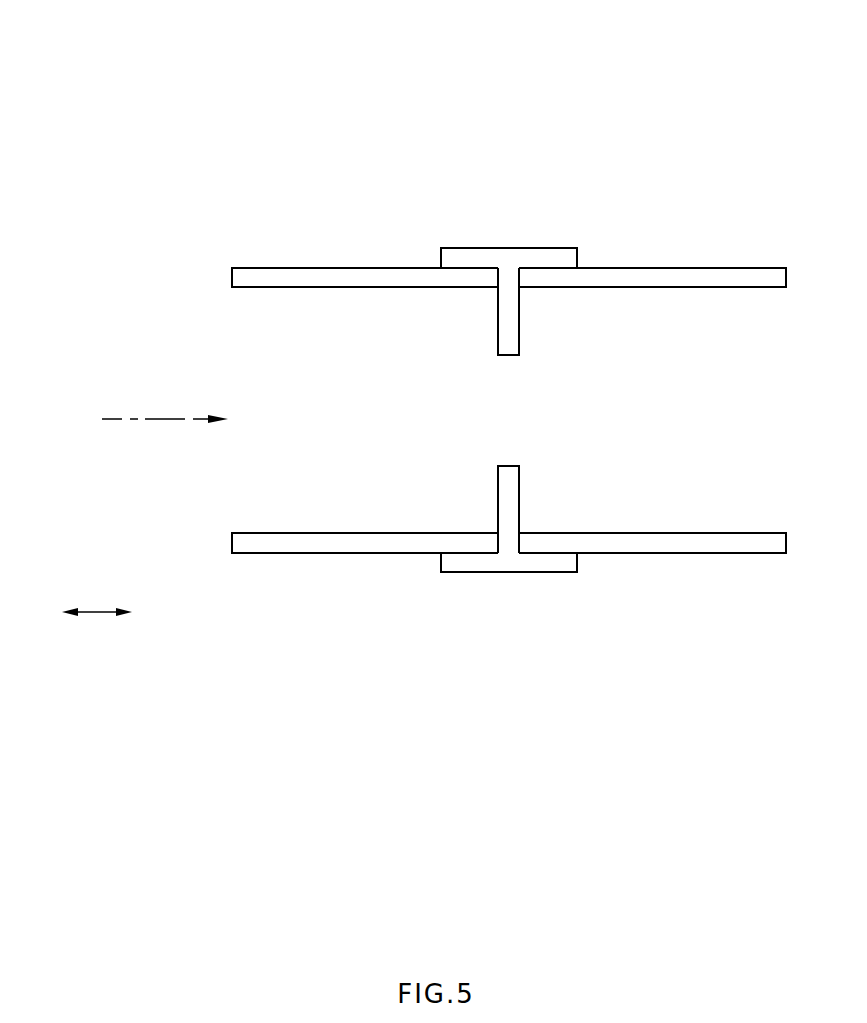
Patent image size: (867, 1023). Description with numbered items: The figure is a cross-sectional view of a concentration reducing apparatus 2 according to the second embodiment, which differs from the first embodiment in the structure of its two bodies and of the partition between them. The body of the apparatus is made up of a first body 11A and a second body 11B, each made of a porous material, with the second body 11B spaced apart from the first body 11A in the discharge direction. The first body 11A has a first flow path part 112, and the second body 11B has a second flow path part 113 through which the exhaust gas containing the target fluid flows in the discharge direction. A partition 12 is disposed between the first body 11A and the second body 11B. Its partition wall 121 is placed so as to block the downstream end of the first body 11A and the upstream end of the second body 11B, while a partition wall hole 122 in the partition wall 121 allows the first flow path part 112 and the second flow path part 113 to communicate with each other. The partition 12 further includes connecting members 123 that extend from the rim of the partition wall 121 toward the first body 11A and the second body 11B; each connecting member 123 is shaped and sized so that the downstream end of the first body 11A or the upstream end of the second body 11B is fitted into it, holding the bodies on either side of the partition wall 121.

The concentration reducing apparatus 2 is at (155, 42).
The first body 11A is at (307, 276).
The second body 11B is at (696, 276).
The partition 12 is at (375, 178).
The partition wall 121 is at (503, 332).
The partition wall hole 122 is at (515, 408).
The connecting member 123 is at (529, 255).
The first flow path part 112 is at (322, 427).
The second flow path part 113 is at (698, 422).